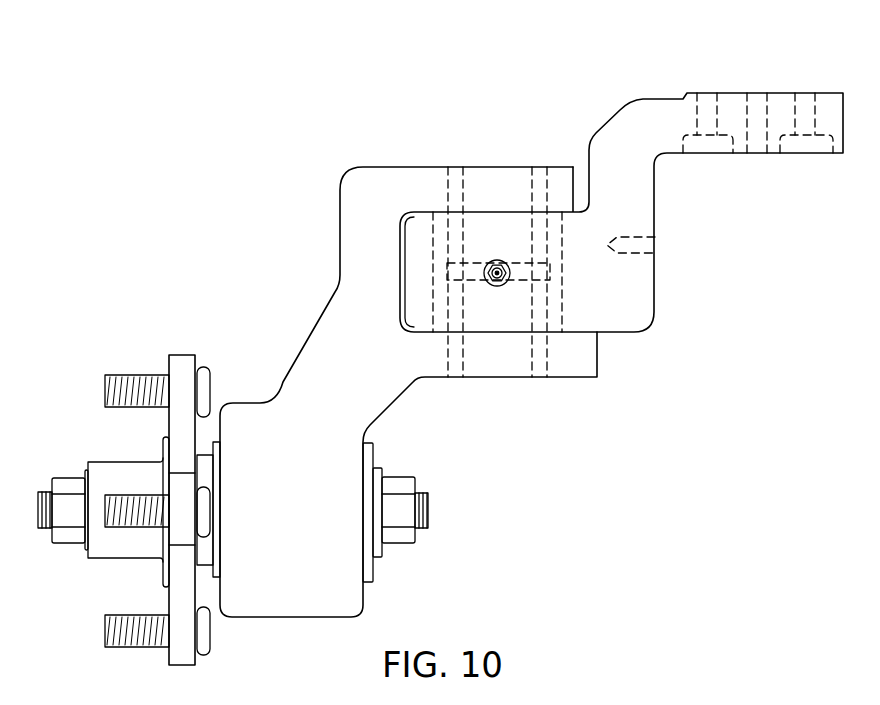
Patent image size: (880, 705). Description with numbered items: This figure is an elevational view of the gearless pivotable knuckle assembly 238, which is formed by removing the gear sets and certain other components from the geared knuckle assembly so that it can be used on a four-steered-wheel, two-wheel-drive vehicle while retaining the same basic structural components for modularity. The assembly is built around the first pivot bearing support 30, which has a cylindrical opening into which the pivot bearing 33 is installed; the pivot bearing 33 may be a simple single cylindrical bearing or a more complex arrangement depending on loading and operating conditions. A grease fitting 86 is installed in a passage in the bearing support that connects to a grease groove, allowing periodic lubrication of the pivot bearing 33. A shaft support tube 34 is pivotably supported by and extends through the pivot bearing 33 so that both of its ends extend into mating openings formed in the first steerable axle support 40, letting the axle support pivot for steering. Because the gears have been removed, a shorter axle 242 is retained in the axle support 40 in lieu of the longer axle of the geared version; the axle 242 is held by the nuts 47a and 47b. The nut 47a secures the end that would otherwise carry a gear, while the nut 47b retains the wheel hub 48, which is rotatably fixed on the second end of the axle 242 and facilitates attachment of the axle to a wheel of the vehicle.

The pivotable knuckle assembly 238 is at (593, 58).
The first pivot bearing support 30 is at (621, 302).
The pivot bearing 33 is at (565, 258).
The shaft support tube 34 is at (464, 180).
The first steerable axle support 40 is at (357, 388).
The wheel hub 48 is at (123, 462).
The nut 47a is at (398, 548).
The nut 47b is at (68, 544).
The grease fitting 86 is at (498, 287).
The shorter axle 242 is at (430, 507).